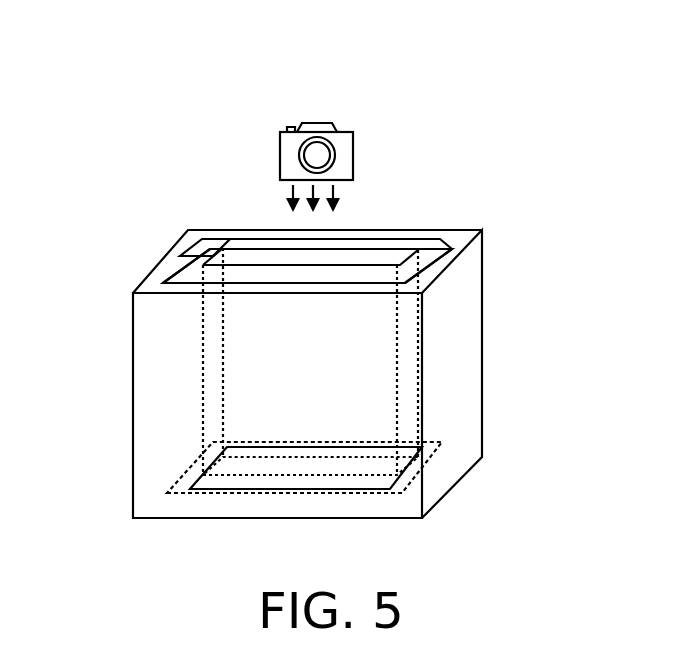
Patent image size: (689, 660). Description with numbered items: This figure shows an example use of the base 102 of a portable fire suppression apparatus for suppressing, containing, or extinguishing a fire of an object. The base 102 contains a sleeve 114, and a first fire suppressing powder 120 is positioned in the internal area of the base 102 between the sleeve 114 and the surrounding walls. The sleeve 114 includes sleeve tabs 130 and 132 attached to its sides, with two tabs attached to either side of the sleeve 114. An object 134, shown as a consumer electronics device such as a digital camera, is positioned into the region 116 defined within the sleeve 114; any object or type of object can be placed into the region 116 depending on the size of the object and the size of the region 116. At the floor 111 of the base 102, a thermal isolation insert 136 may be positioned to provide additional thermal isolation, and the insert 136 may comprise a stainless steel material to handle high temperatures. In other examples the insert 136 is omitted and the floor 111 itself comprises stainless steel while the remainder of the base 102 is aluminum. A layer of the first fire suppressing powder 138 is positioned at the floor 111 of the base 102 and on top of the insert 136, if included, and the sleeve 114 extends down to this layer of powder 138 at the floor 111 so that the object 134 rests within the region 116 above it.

The container body 102 is at (455, 372).
The bottom edge of container 111 is at (195, 525).
The left tab 114 is at (212, 243).
The plate 116 is at (367, 252).
The sheet 120 is at (430, 245).
The left rim side 130 is at (187, 257).
The right rim side 132 is at (442, 257).
The camera 134 is at (325, 112).
The bottom outline (dashed) 136 is at (412, 485).
The bottom plate 138 is at (382, 490).